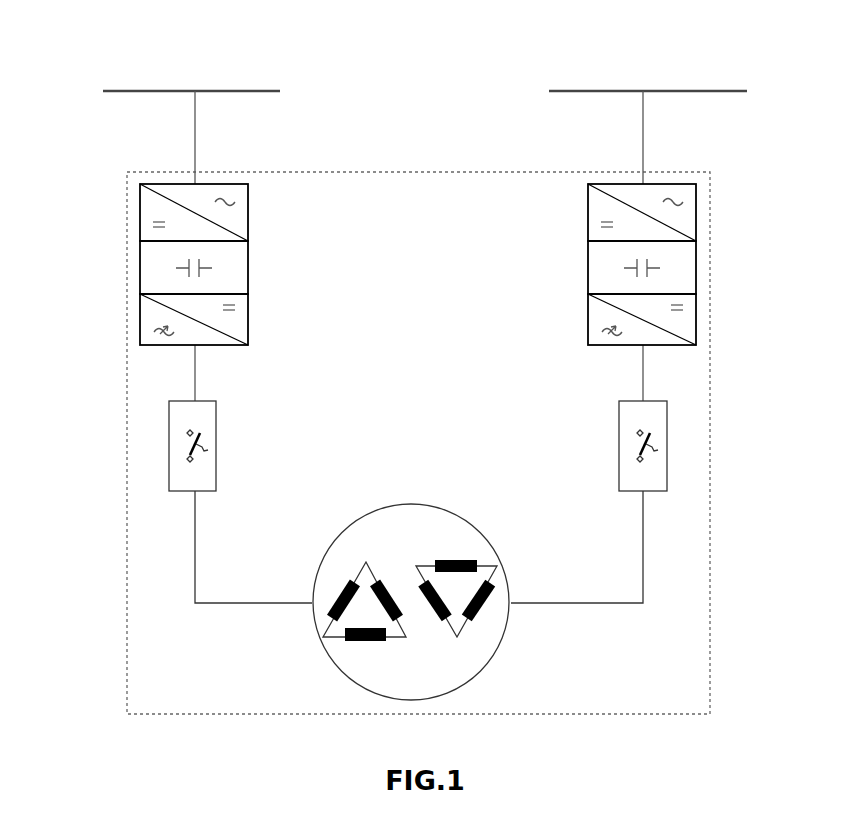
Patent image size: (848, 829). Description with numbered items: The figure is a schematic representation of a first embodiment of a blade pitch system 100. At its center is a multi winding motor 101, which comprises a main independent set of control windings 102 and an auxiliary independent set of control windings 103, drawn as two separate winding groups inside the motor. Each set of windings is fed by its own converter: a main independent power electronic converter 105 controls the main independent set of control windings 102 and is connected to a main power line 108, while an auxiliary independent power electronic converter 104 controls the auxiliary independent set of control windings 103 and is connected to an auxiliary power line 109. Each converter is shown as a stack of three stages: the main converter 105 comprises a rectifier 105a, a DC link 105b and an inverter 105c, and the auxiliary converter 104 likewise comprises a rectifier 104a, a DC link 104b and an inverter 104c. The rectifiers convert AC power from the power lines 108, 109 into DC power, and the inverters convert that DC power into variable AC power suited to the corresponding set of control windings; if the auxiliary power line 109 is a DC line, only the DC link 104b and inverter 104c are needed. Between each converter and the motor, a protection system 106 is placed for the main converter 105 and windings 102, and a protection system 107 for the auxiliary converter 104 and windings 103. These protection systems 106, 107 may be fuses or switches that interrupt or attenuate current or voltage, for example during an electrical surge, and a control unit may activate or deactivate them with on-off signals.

The blade pitch system 100 is at (405, 172).
The multi winding motor 101 is at (431, 570).
The main independent set of control windings 102 is at (342, 641).
The auxiliary independent set of control windings 103 is at (471, 628).
The auxiliary independent power electronic converter 104 is at (701, 233).
The rectifier 104a is at (699, 212).
The DC link 104b is at (699, 265).
The inverter 104c is at (699, 315).
The main independent power electronic converter 105 is at (133, 233).
The rectifier 105a is at (138, 218).
The DC link 105b is at (138, 272).
The inverter 105c is at (138, 318).
The protection system 106 is at (168, 441).
The protection system 107 is at (668, 430).
The main power line 108 is at (196, 86).
The auxiliary power line 109 is at (644, 86).